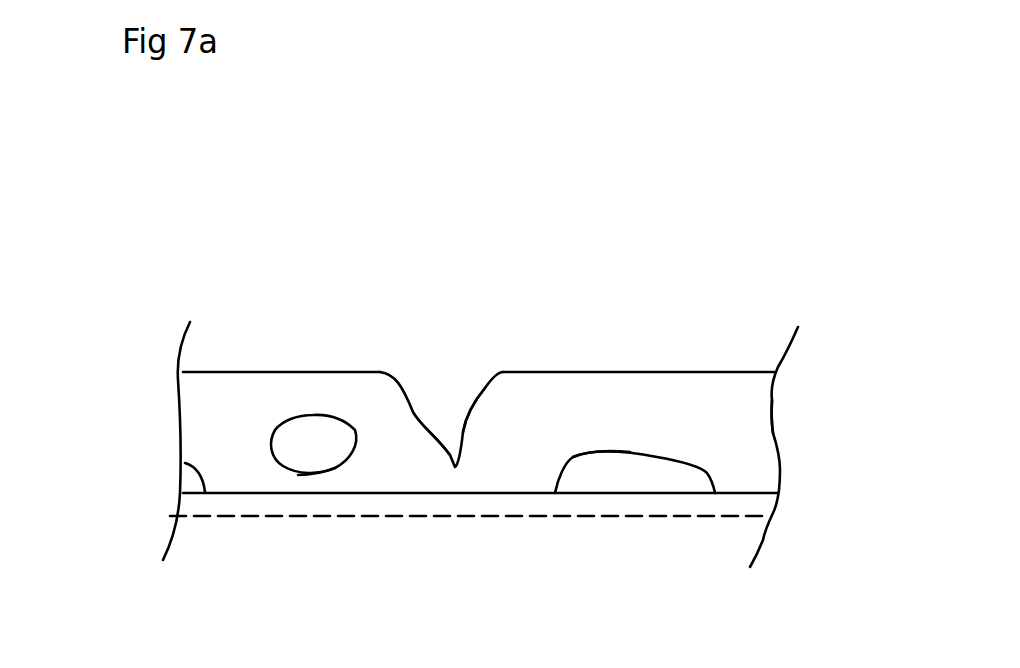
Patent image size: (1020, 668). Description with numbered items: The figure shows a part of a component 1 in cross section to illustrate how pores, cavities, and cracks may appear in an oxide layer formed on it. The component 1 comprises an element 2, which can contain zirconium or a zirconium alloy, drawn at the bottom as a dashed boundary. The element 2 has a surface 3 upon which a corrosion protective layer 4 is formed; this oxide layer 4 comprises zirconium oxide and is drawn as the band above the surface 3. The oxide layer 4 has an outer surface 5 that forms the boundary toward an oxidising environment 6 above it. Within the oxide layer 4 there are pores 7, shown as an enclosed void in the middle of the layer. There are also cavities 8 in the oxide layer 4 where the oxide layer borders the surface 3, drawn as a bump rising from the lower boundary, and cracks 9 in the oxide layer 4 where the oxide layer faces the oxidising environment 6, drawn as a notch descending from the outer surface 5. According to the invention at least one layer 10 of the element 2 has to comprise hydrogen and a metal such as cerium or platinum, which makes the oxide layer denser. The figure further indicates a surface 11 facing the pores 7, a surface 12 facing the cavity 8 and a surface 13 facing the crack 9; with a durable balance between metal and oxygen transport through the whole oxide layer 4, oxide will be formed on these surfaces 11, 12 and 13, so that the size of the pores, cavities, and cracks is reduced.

The component 1 is at (167, 283).
The element 2 is at (735, 535).
The surface 3 is at (185, 463).
The corrosion protective layer 4 is at (753, 420).
The outer surface 5 is at (607, 372).
The oxidising environment 6 is at (457, 242).
The pores 7 is at (313, 435).
The cavities 8 is at (650, 475).
The cracks 9 is at (448, 400).
The layer 10 is at (768, 502).
The surface facing the pores 11 is at (313, 475).
The surface facing the cavity 12 is at (577, 463).
The surface facing the crack 13 is at (475, 398).